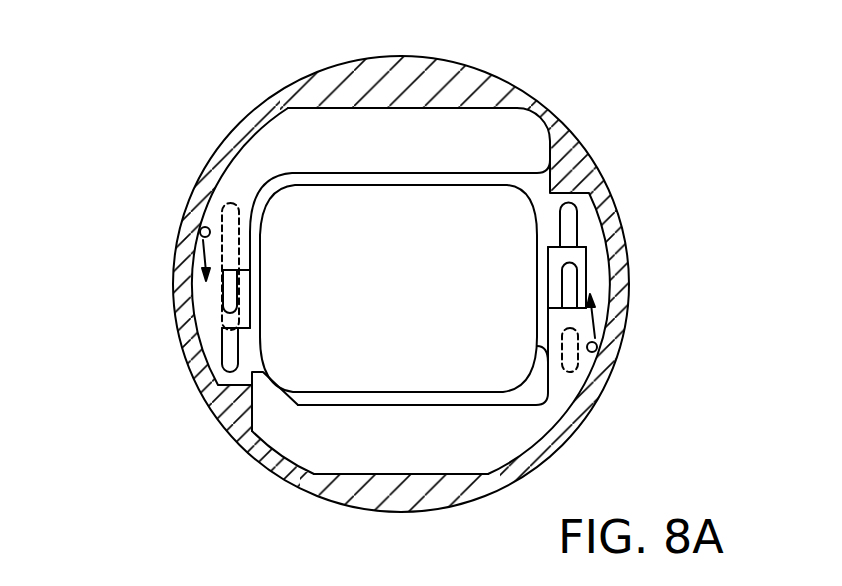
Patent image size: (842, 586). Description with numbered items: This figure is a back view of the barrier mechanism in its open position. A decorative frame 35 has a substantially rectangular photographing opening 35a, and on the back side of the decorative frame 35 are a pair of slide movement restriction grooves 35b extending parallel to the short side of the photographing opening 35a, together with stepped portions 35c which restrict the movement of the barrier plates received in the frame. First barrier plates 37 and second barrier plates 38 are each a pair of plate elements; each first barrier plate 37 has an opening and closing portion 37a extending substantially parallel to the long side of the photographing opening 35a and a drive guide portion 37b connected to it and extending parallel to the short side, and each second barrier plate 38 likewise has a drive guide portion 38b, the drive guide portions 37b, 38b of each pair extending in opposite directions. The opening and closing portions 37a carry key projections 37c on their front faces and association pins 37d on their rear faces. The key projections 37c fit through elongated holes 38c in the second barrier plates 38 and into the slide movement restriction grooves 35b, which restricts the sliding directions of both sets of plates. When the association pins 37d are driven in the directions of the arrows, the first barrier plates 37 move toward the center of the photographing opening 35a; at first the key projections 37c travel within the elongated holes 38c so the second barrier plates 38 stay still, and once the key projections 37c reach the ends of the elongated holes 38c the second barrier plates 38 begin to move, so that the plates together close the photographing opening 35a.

The decorative frame 35 is at (542, 118).
The photographing opening 35a is at (463, 197).
The slide movement restriction grooves 35b is at (576, 214).
The stepped portions 35c is at (457, 120).
The first barrier plates 37 is at (417, 428).
The opening and closing portion 37a is at (316, 118).
The drive guide portion 37b is at (250, 180).
The key projections 37c is at (220, 208).
The association pins 37d is at (200, 232).
The second barrier plates 38 is at (424, 285).
The drive guide portion 38b is at (600, 286).
The elongated holes 38c is at (576, 270).